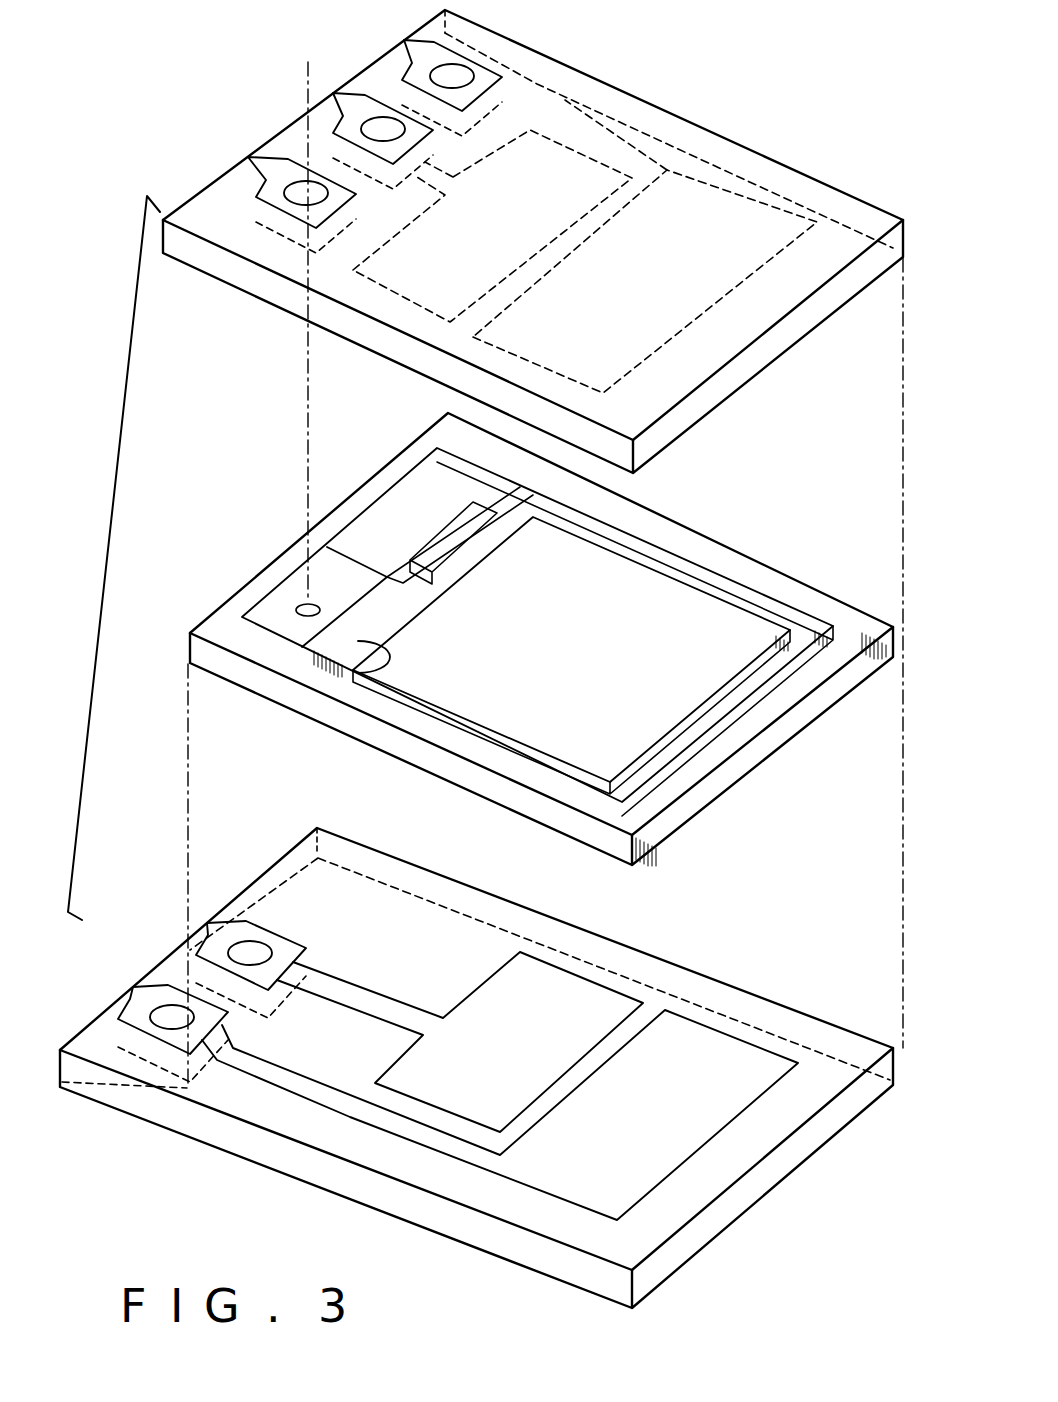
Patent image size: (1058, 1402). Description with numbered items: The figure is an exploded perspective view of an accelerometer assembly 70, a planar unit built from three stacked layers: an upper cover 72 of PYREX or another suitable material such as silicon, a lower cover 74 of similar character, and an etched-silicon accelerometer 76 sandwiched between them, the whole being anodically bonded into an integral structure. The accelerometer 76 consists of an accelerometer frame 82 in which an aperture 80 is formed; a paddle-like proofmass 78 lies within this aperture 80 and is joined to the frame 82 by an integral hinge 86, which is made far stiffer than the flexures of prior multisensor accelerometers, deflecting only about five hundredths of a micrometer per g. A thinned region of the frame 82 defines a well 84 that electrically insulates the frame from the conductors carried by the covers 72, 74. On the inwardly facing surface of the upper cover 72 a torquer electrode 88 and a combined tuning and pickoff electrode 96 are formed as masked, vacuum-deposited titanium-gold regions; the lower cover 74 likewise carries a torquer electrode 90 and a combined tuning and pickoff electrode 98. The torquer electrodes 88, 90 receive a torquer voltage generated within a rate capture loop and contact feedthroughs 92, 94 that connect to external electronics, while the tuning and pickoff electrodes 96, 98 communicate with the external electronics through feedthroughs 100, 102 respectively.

The accelerometer assembly 70 is at (110, 493).
The upper cover 72 is at (533, 236).
The lower cover 74 is at (476, 1066).
The accelerometer 76 is at (541, 639).
The proofmass 78 is at (722, 635).
The aperture 80 is at (800, 640).
The accelerometer frame 82 is at (283, 657).
The well 84 is at (270, 620).
The integral hinge 86 is at (375, 655).
The torquer electrode 88 is at (605, 393).
The torquer electrode 90 is at (735, 1060).
The feedthrough 92 is at (487, 82).
The feedthrough 94 is at (138, 1000).
The combined tuning and pickoff electrode 96 is at (425, 308).
The combined tuning and pickoff electrode 98 is at (568, 995).
The feedthrough 100 is at (362, 112).
The feedthrough 102 is at (238, 927).